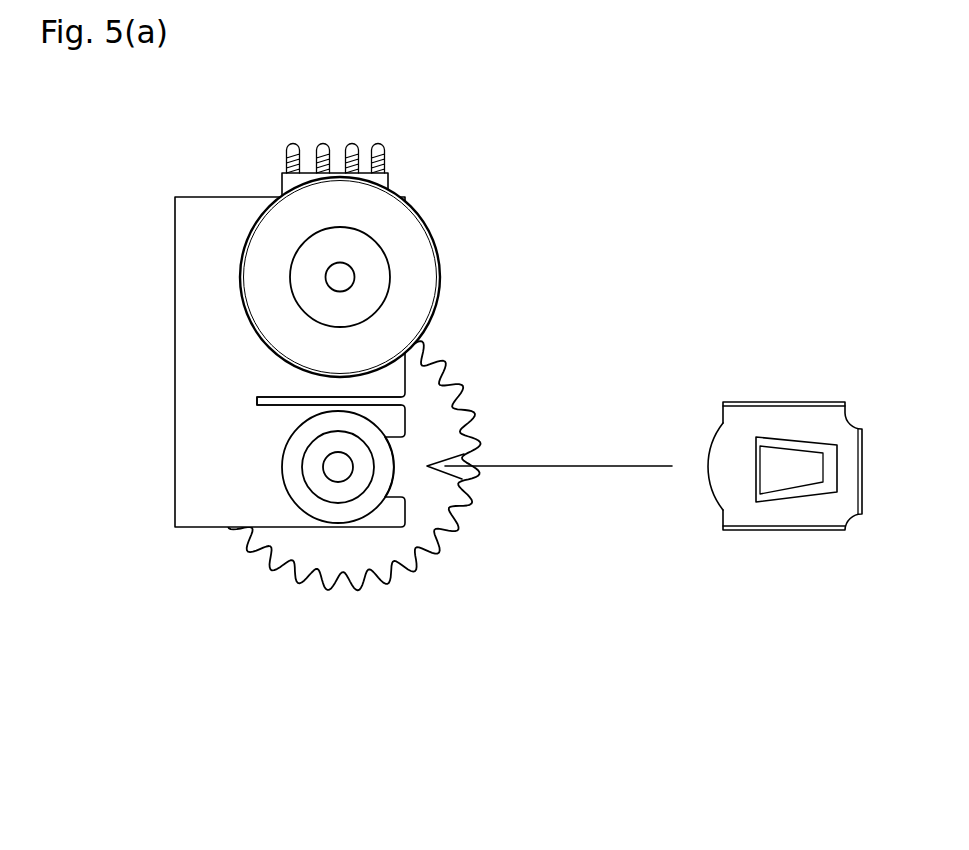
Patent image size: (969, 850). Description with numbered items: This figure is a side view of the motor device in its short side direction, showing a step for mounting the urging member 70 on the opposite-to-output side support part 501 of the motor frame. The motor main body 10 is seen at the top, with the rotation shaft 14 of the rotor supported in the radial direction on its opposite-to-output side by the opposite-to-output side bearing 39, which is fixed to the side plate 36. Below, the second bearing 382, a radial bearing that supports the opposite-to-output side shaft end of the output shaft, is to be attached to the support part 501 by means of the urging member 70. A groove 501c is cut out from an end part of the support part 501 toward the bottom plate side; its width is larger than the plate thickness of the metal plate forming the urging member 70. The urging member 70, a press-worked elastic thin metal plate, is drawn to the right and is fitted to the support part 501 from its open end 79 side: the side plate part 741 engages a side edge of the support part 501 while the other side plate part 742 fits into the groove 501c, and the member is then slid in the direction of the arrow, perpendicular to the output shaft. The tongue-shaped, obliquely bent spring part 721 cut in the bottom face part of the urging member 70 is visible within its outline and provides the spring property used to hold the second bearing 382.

The motor main body 10 is at (392, 236).
The rotation shaft 14 is at (343, 273).
The side plate 36 is at (368, 203).
The opposite-to-output side bearing 39 is at (377, 290).
The urging member 70 is at (741, 456).
The open end 79 is at (695, 412).
The second bearing 382 is at (277, 570).
The opposite-to-output side support part 501 is at (198, 532).
The groove 501c is at (257, 400).
The spring part 721 is at (770, 482).
The side plate part 741 is at (780, 530).
The side plate part 742 is at (763, 400).